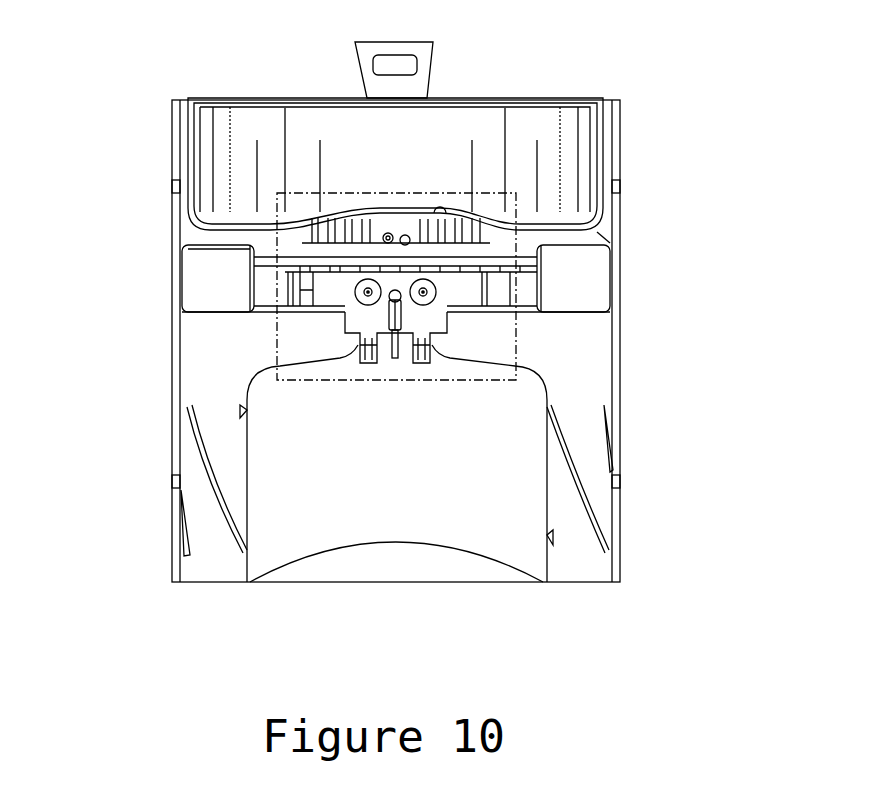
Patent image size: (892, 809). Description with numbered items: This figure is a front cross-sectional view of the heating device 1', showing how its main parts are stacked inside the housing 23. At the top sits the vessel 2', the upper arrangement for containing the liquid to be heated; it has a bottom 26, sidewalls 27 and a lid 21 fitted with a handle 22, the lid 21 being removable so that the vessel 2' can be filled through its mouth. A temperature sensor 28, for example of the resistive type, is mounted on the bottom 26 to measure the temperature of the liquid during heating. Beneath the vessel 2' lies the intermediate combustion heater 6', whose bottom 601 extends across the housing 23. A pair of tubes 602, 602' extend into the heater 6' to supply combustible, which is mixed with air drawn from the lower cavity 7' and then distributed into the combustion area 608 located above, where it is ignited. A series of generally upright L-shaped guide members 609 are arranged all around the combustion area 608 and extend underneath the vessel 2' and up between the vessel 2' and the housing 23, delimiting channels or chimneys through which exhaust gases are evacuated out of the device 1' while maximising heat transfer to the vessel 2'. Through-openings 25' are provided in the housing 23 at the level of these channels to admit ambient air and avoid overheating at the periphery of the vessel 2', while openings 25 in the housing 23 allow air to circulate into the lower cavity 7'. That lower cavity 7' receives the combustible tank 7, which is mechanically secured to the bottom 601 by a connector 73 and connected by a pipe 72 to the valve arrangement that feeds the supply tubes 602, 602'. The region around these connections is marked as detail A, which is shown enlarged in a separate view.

The heating device 1' is at (447, 300).
The vessel 2' is at (395, 130).
The lid 21 is at (512, 100).
The handle 22 is at (425, 53).
The housing 23 is at (617, 448).
The openings 25 is at (347, 459).
The through-openings 25' is at (357, 215).
The bottom 26 is at (323, 213).
The sidewalls 27 is at (395, 126).
The temperature sensor 28 is at (440, 203).
The combustion heater 6' is at (463, 453).
The bottom 601 is at (540, 280).
The tube 602 is at (458, 319).
The tube 602' is at (331, 320).
The combustion area 608 is at (357, 250).
The guide members 609 is at (600, 229).
The pipe 72 is at (397, 322).
The connector 73 is at (419, 350).
The combustible tank 7 is at (396, 493).
The lower cavity 7' is at (191, 564).
The detail A is at (326, 383).